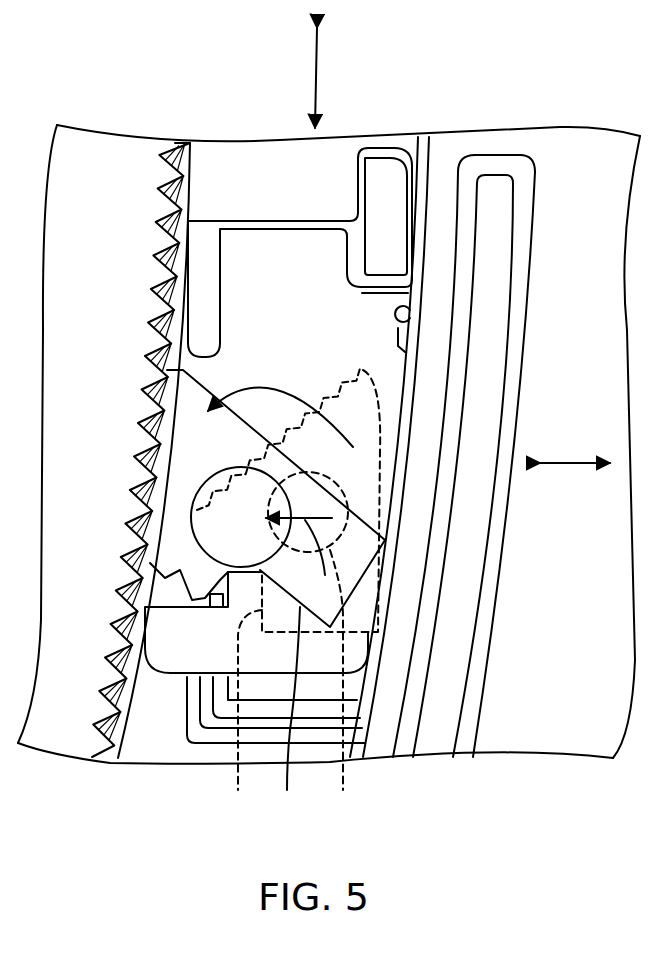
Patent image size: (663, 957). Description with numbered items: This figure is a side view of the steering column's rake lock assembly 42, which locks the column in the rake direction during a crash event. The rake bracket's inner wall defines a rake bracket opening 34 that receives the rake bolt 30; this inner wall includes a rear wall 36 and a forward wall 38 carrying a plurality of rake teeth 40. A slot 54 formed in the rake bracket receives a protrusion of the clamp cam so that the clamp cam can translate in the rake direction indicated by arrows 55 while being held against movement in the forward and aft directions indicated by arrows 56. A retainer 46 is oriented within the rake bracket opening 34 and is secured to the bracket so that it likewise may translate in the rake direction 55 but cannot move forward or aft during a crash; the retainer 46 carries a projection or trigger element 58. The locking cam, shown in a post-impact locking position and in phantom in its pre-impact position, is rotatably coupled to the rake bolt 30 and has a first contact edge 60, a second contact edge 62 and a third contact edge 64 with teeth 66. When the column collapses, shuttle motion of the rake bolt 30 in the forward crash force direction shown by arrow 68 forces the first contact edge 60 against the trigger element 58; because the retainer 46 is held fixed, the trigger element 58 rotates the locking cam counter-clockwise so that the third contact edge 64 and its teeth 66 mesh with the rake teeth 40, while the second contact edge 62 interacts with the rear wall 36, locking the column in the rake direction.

The rake bolt 30 is at (223, 548).
The rake bracket opening 34 is at (396, 127).
The rear wall 36 is at (404, 323).
The forward wall 38 is at (165, 185).
The rake teeth 40 is at (155, 233).
The rake lock assembly 42 is at (556, 129).
The retainer 46 is at (278, 268).
The slot 54 is at (468, 557).
The rake direction arrows 55 is at (320, 83).
The forward and aft direction arrows 56 is at (577, 460).
The trigger element 58 is at (248, 580).
The first contact edge 60 is at (264, 712).
The second contact edge 62 is at (377, 573).
The third contact edge 64 is at (329, 374).
The teeth 66 is at (160, 485).
The crash force direction arrow 68 is at (323, 565).